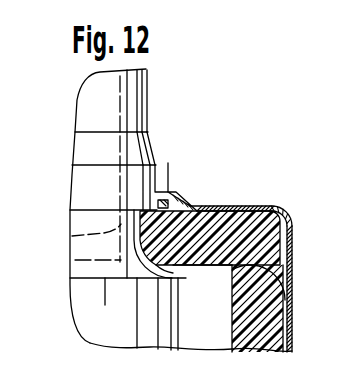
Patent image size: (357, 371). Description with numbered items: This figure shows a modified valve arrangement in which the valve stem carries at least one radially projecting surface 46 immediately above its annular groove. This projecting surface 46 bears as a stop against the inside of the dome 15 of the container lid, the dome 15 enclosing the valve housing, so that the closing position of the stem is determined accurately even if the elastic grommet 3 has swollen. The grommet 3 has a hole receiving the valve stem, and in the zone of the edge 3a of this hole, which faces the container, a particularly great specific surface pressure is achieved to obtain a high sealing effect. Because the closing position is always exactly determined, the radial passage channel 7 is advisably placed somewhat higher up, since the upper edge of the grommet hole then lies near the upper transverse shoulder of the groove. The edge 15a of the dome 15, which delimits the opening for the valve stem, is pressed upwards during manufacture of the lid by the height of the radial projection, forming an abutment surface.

The radial passage channel 7 is at (72, 236).
The elastic grommet 3 is at (230, 220).
The edge of the grommet hole facing the container 3a is at (188, 266).
The dome 15 is at (247, 249).
The edge of the dome 15a is at (175, 191).
The radially projecting surface 46 is at (190, 207).